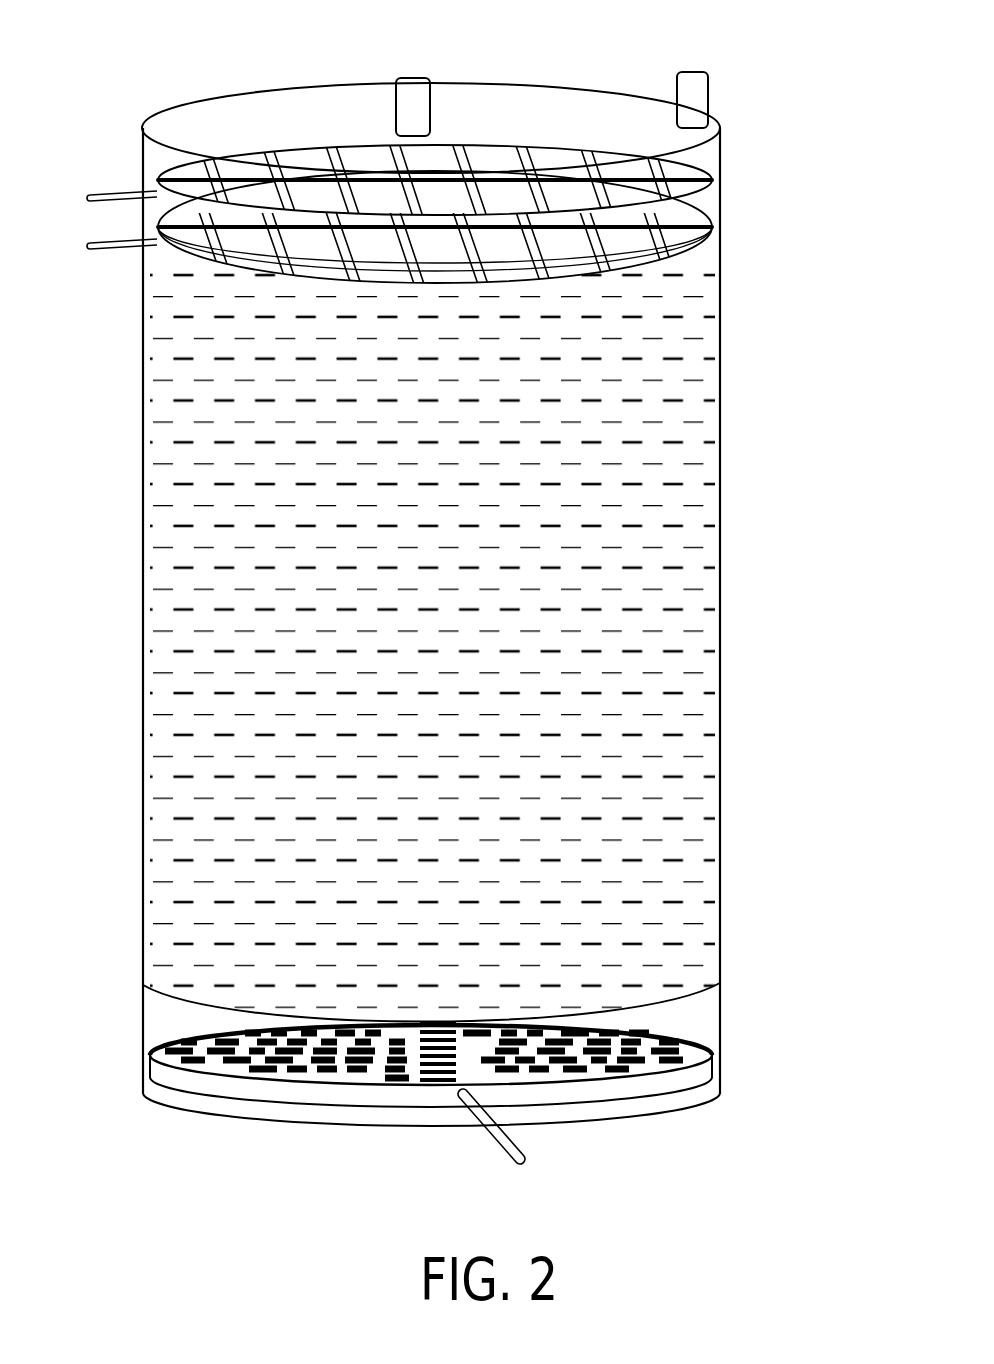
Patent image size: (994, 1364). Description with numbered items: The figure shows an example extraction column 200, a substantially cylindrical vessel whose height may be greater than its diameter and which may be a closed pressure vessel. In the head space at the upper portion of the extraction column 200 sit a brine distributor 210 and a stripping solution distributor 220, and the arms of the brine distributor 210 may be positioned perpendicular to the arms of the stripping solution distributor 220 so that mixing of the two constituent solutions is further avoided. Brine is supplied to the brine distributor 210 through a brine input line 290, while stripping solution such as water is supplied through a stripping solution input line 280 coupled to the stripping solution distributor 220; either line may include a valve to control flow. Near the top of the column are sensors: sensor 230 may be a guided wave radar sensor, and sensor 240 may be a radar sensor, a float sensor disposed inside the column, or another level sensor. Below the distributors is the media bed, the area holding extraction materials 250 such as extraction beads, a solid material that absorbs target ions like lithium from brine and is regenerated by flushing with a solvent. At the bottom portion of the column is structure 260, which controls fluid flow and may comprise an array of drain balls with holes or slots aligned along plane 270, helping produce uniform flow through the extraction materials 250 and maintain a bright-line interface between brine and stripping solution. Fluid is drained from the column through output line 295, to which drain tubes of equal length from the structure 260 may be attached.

The extraction column 200 is at (252, 80).
The brine distributor 210 is at (707, 230).
The stripping solution distributor 220 is at (707, 180).
The sensor 230 is at (417, 75).
The sensor 240 is at (692, 70).
The extraction materials 250 is at (682, 507).
The structure 260 is at (265, 1082).
The plane 270 is at (722, 1060).
The stripping solution input line 280 is at (87, 197).
The brine input line 290 is at (93, 245).
The output line 295 is at (527, 1138).